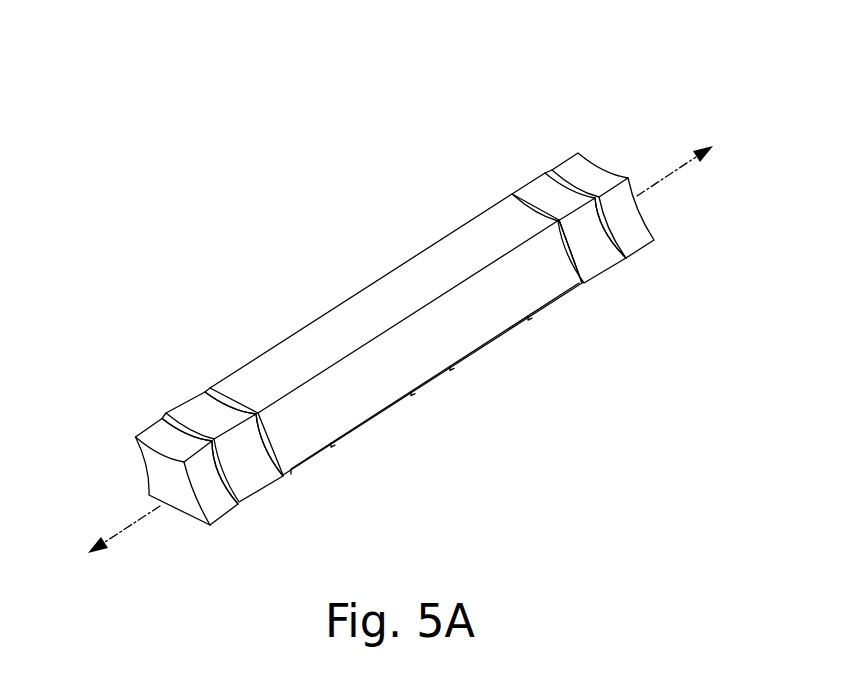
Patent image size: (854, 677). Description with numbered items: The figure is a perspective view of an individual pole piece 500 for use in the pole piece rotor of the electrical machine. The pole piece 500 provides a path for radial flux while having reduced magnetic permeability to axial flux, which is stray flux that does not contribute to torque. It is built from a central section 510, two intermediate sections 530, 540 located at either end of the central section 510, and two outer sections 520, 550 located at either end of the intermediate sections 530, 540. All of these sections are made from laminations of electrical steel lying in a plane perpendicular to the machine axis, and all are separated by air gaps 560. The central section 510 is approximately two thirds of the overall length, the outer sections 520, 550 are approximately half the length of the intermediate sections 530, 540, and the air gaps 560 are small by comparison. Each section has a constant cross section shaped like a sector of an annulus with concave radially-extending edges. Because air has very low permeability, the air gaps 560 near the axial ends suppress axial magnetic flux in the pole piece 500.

The pole piece 500 is at (266, 173).
The central section 510 is at (347, 300).
The outer section 520 is at (150, 426).
The intermediate section 530 is at (188, 400).
The intermediate section 540 is at (535, 180).
The outer section 550 is at (565, 162).
The air gap 560 is at (238, 506).